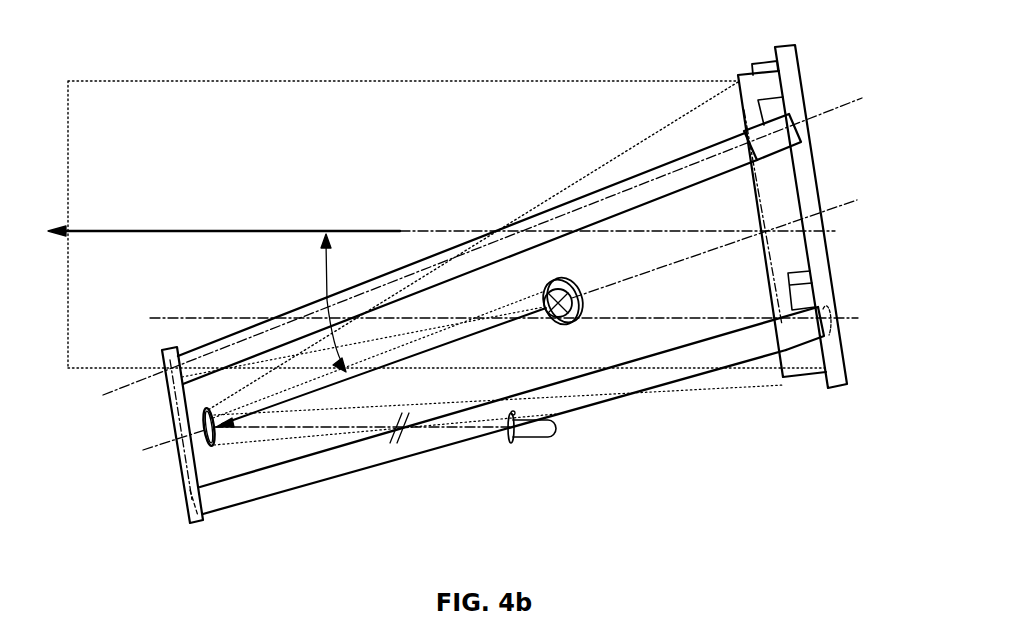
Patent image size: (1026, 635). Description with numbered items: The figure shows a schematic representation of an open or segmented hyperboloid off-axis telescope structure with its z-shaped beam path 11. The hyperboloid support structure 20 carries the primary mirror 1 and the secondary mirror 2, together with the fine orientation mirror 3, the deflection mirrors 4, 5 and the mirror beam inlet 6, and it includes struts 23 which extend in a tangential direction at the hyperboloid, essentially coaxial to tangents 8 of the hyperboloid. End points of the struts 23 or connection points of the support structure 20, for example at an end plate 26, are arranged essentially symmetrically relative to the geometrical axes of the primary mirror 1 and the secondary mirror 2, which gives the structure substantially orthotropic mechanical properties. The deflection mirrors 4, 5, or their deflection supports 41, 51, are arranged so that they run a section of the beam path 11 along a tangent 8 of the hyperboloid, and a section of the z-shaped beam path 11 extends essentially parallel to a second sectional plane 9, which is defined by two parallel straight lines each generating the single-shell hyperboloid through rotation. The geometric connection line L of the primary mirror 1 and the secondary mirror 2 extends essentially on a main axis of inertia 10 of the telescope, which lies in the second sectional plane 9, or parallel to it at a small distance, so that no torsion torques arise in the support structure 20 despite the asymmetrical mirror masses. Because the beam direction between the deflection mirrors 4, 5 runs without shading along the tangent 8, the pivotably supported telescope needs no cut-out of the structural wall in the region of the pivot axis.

The primary mirror 1 is at (758, 185).
The main axis of inertia 10 is at (720, 247).
The second sectional plane 9 is at (642, 187).
The struts 23 is at (570, 217).
The secondary mirror 2 is at (200, 442).
The end plate 26 is at (180, 407).
The deflection mirror 4 is at (220, 434).
The deflection support 41 is at (212, 447).
The z-shaped beam path 11 is at (185, 231).
The tangent 8 is at (483, 317).
The support structure 20 is at (604, 150).
The mirror beam inlet 6 is at (561, 323).
The deflection mirror 5 is at (552, 322).
The deflection support 51 is at (560, 277).
The fine orientation mirror 3 is at (513, 447).